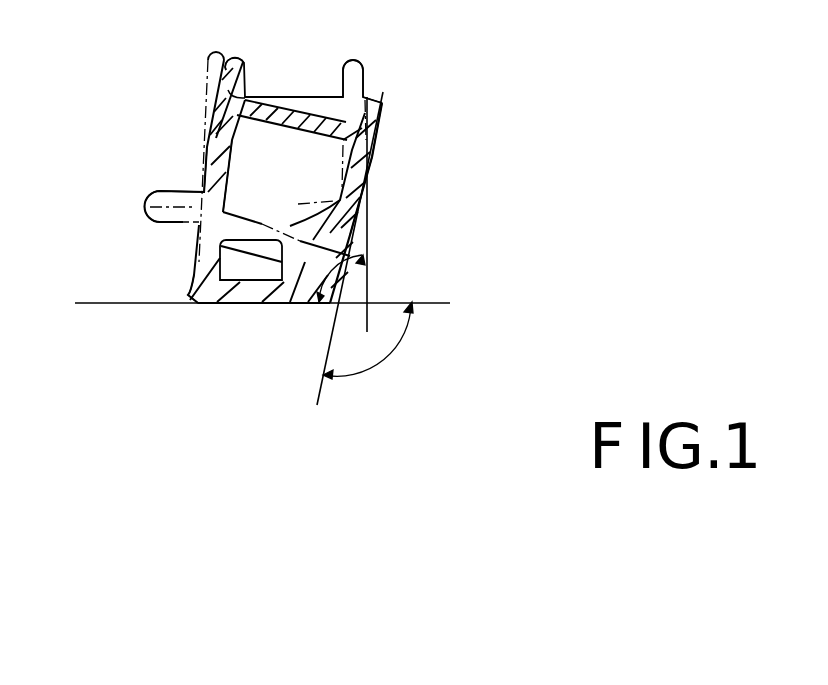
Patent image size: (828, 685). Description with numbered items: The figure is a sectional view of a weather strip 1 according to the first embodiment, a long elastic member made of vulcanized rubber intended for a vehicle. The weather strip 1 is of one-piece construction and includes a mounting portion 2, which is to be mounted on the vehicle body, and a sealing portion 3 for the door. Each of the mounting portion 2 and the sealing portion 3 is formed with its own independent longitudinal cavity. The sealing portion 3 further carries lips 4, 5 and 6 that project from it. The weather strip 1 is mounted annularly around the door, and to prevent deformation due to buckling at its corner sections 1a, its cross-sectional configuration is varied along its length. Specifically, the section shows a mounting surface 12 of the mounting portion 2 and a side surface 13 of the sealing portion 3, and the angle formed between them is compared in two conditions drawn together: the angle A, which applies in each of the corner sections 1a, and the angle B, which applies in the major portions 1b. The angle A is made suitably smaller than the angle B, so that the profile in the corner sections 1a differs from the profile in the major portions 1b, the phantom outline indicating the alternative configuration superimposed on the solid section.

The weather strip 1 is at (187, 110).
The corner sections 1a is at (300, 91).
The major portions 1b is at (370, 97).
The mounting portion 2 is at (187, 294).
The sealing portion 3 is at (215, 148).
The lip 4 is at (381, 106).
The lip 5 is at (241, 62).
The lip 6 is at (149, 194).
The mounting surface 12 is at (232, 303).
The side surface 13 is at (373, 152).
The angle A is at (335, 263).
The angle B is at (397, 343).